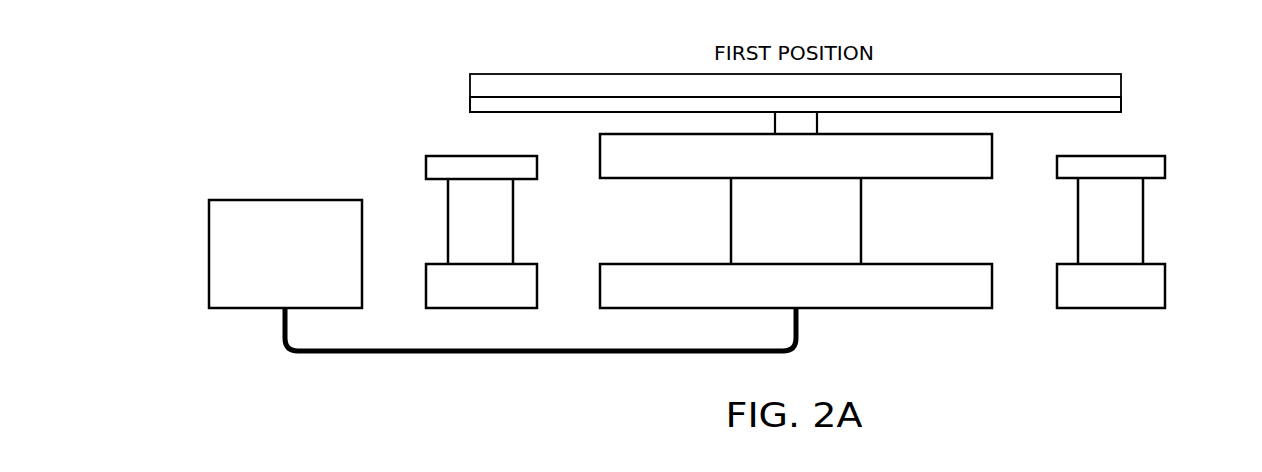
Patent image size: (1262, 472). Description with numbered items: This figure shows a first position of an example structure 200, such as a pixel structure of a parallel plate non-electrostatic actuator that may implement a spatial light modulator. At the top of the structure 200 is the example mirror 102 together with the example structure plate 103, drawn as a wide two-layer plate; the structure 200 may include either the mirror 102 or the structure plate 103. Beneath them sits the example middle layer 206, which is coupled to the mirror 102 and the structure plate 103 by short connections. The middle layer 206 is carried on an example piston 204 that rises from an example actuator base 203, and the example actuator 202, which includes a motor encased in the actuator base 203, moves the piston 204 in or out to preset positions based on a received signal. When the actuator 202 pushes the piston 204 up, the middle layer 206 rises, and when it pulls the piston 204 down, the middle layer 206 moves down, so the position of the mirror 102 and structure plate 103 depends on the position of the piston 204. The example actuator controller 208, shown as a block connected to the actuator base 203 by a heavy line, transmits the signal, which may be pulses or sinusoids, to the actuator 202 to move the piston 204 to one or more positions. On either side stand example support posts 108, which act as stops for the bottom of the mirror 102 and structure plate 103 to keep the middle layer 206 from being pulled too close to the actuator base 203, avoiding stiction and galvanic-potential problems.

The structure 200 is at (318, 63).
The mirror 102 is at (478, 82).
The structure plate 103 is at (1113, 102).
The support posts 108 is at (448, 221).
The actuator 202 is at (839, 320).
The actuator base 203 is at (937, 309).
The piston 204 is at (731, 221).
The middle layer 206 is at (895, 170).
The actuator controller 208 is at (209, 252).